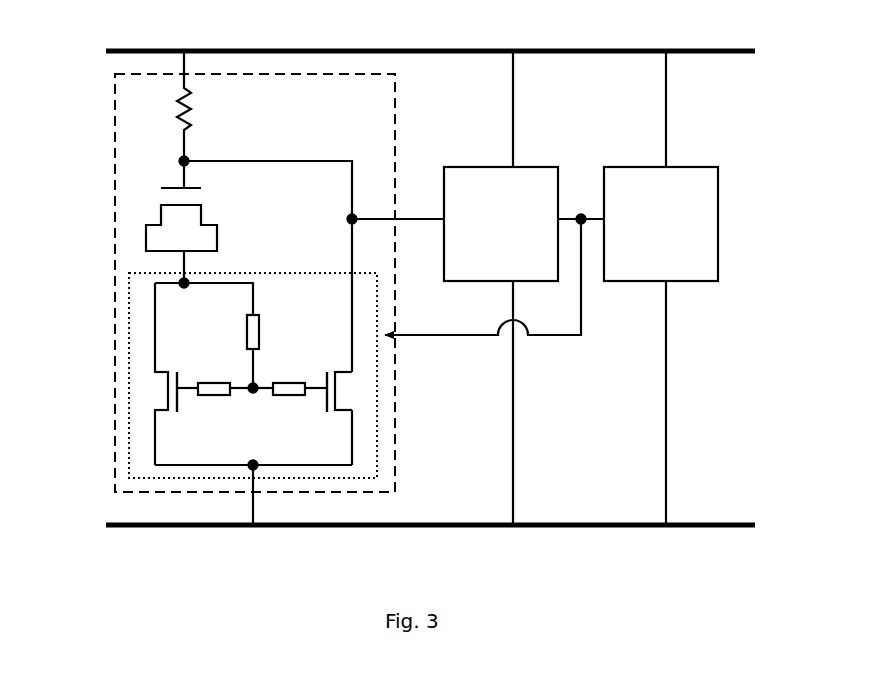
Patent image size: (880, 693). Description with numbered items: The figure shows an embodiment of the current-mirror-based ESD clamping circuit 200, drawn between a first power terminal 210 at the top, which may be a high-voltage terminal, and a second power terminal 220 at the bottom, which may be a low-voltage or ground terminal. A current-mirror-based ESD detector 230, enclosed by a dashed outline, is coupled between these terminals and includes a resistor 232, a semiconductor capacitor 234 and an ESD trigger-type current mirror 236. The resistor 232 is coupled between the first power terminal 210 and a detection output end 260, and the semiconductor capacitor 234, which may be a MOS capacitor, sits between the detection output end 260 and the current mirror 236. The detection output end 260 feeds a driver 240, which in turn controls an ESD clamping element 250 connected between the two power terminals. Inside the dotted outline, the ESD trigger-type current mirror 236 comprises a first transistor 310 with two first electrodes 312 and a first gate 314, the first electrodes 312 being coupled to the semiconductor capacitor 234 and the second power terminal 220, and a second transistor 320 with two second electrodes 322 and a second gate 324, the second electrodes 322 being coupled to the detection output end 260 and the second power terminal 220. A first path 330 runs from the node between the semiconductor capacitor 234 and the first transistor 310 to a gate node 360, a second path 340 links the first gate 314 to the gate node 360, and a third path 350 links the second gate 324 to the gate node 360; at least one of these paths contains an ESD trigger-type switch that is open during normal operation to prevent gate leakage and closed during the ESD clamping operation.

The current-mirror-based ESD clamping circuit 200 is at (52, 606).
The first power terminal 210 is at (403, 48).
The second power terminal 220 is at (414, 528).
The current-mirror-based ESD detector 230 is at (115, 167).
The resistor 232 is at (178, 100).
The semiconductor capacitor 234 is at (146, 228).
The ESD trigger-type current mirror 236 is at (129, 303).
The driver 240 is at (484, 167).
The ESD clamping element 250 is at (719, 200).
The detection output end 260 is at (352, 219).
The first transistor 310 is at (170, 390).
The first electrodes 312 is at (153, 367).
The first gate 314 is at (185, 392).
The second transistor 320 is at (337, 390).
The second electrodes 322 is at (355, 368).
The second gate 324 is at (320, 392).
The first path 330 is at (259, 328).
The second path 340 is at (215, 397).
The third path 350 is at (290, 397).
The gate node 360 is at (253, 395).